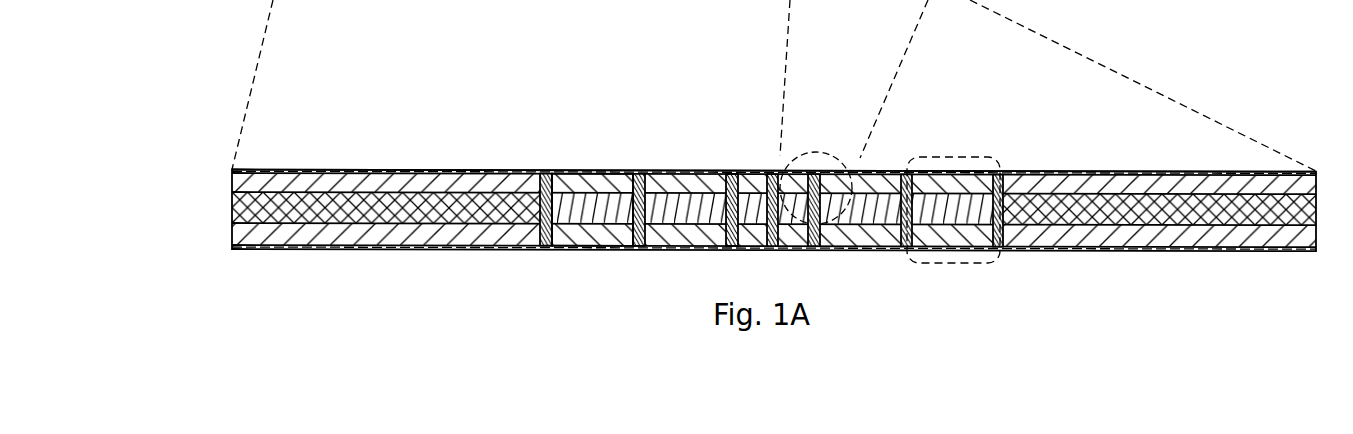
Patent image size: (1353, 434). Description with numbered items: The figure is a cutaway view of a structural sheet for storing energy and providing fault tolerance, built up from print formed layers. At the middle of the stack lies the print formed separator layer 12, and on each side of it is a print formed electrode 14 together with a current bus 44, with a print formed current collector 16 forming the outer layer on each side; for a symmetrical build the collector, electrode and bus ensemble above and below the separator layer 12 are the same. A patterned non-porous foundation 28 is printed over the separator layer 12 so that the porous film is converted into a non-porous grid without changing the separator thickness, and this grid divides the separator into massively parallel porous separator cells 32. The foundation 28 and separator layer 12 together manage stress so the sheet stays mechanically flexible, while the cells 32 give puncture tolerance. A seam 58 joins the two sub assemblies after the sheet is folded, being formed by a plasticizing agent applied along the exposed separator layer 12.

The seam 58 is at (233, 210).
The current collector 16 is at (446, 170).
The electrode 14 is at (566, 170).
The patterned non-porous foundation 28 is at (613, 170).
The separator layer 12 is at (605, 215).
The current bus 44 is at (640, 170).
The porous separator cell 32 is at (955, 157).